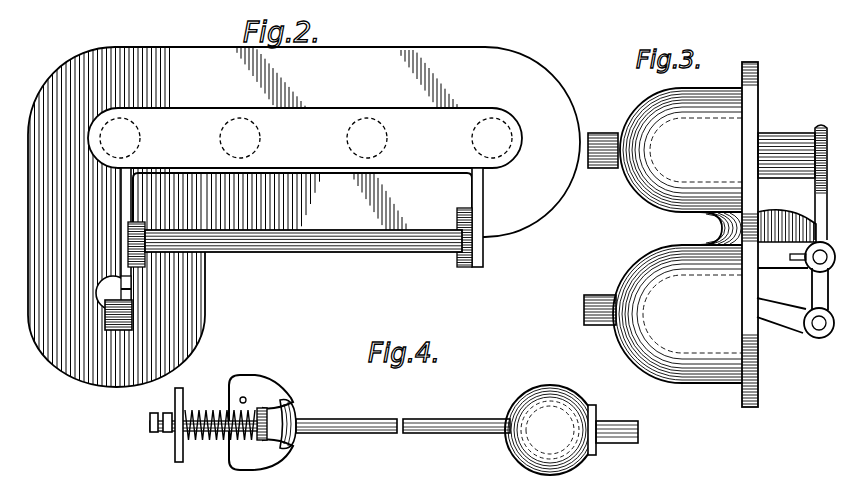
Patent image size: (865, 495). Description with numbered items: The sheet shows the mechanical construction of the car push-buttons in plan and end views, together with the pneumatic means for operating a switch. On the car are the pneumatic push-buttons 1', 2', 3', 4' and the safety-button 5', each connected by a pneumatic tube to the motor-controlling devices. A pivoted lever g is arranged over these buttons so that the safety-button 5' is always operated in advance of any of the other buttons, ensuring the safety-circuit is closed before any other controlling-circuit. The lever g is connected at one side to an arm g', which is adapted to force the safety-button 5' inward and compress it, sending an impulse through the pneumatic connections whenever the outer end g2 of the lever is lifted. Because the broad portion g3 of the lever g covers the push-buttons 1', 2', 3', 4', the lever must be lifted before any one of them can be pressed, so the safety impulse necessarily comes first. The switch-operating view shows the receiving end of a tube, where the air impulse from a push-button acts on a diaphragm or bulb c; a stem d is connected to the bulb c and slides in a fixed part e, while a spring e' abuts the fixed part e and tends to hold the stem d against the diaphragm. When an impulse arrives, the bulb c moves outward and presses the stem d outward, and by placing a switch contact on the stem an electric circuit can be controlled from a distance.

In FIG. 2, the pneumatic push-button 1' is at (120, 138).
In FIG. 3, the pneumatic push-button 1' is at (786, 142).
In FIG. 2, the pneumatic push-button 2' is at (240, 138).
In FIG. 2, the pneumatic push-button 3' is at (367, 138).
In FIG. 2, the pneumatic push-button 4' is at (492, 138).
In FIG. 2, the safety-button 5' is at (83, 335).
In FIG. 2, the pivoted lever g is at (302, 240).
In FIG. 3, the pivoted lever g is at (788, 225).
In FIG. 2, the arm g' is at (117, 353).
In FIG. 3, the arm g' is at (795, 330).
In FIG. 3, the outer end of lever g2 is at (822, 125).
In FIG. 2, the broad portion of lever g3 is at (305, 138).
In FIG. 4, the diaphragm or bulb c is at (246, 401).
In FIG. 4, the stem d is at (210, 433).
In FIG. 4, the fixed part e is at (160, 430).
In FIG. 4, the spring e' is at (220, 414).